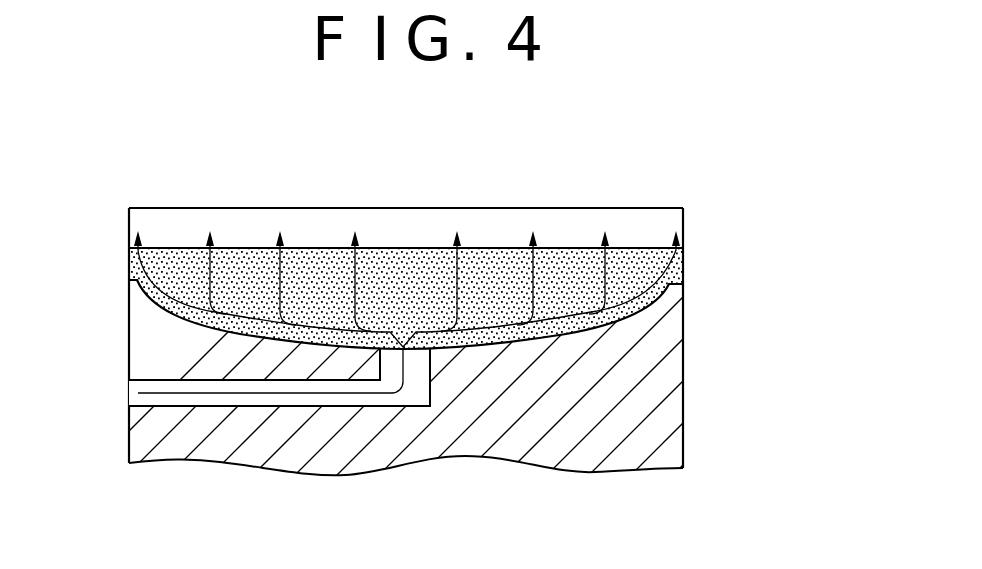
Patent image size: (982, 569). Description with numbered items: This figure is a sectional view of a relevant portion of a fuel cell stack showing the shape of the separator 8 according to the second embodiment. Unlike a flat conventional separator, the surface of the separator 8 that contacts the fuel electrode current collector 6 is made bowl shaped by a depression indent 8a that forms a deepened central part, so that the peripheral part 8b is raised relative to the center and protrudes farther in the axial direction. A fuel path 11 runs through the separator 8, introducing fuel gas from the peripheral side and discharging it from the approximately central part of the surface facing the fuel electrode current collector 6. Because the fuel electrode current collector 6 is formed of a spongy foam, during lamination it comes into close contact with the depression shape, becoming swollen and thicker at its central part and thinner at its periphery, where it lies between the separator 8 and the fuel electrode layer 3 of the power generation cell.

The fuel electrode layer 3 is at (609, 222).
The fuel electrode current collector 6 is at (684, 262).
The separator 8 is at (670, 412).
The depression indent 8a is at (523, 343).
The peripheral part 8b is at (129, 290).
The fuel path 11 is at (128, 393).